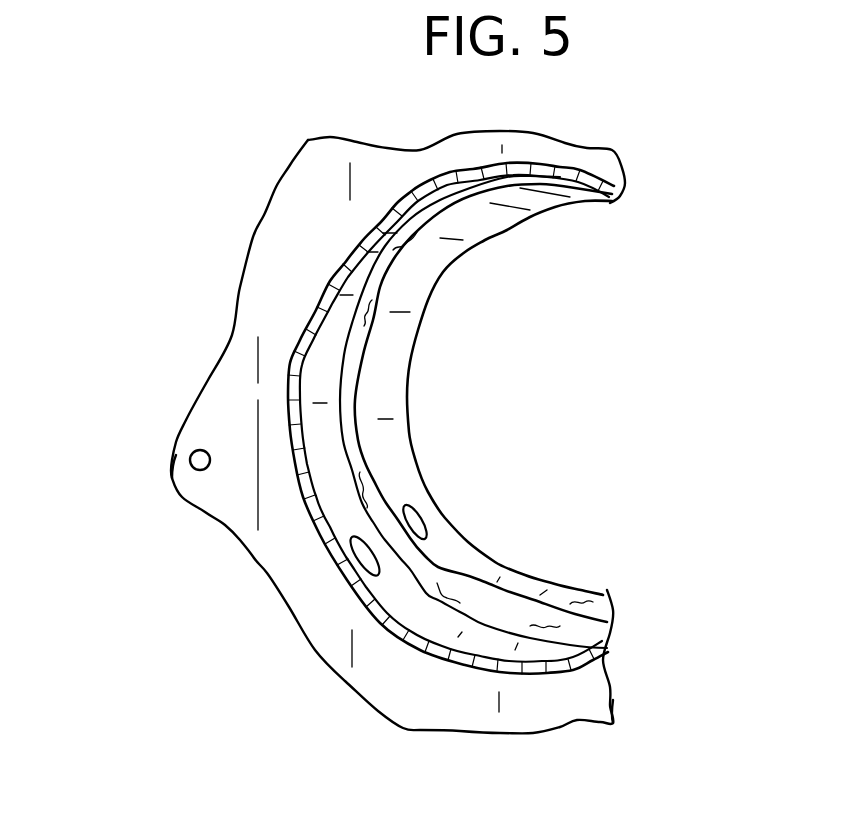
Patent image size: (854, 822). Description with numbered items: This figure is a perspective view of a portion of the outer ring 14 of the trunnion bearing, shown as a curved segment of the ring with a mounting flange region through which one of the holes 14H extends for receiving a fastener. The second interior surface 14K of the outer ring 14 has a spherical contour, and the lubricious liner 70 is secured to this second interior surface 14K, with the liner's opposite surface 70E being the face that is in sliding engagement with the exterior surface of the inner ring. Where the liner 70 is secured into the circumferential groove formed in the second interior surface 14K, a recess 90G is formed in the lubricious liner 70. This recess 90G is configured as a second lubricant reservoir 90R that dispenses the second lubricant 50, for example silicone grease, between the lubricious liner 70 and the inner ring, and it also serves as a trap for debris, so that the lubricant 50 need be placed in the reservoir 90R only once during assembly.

The outer ring 14 is at (290, 272).
The holes 14H is at (199, 460).
The second interior surface 14K is at (238, 540).
The second lubricant 50 is at (372, 560).
The lubricious liner 70 is at (600, 645).
The surface 70E is at (588, 588).
The recess 90G is at (476, 412).
The second lubricant reservoir 90R is at (343, 408).